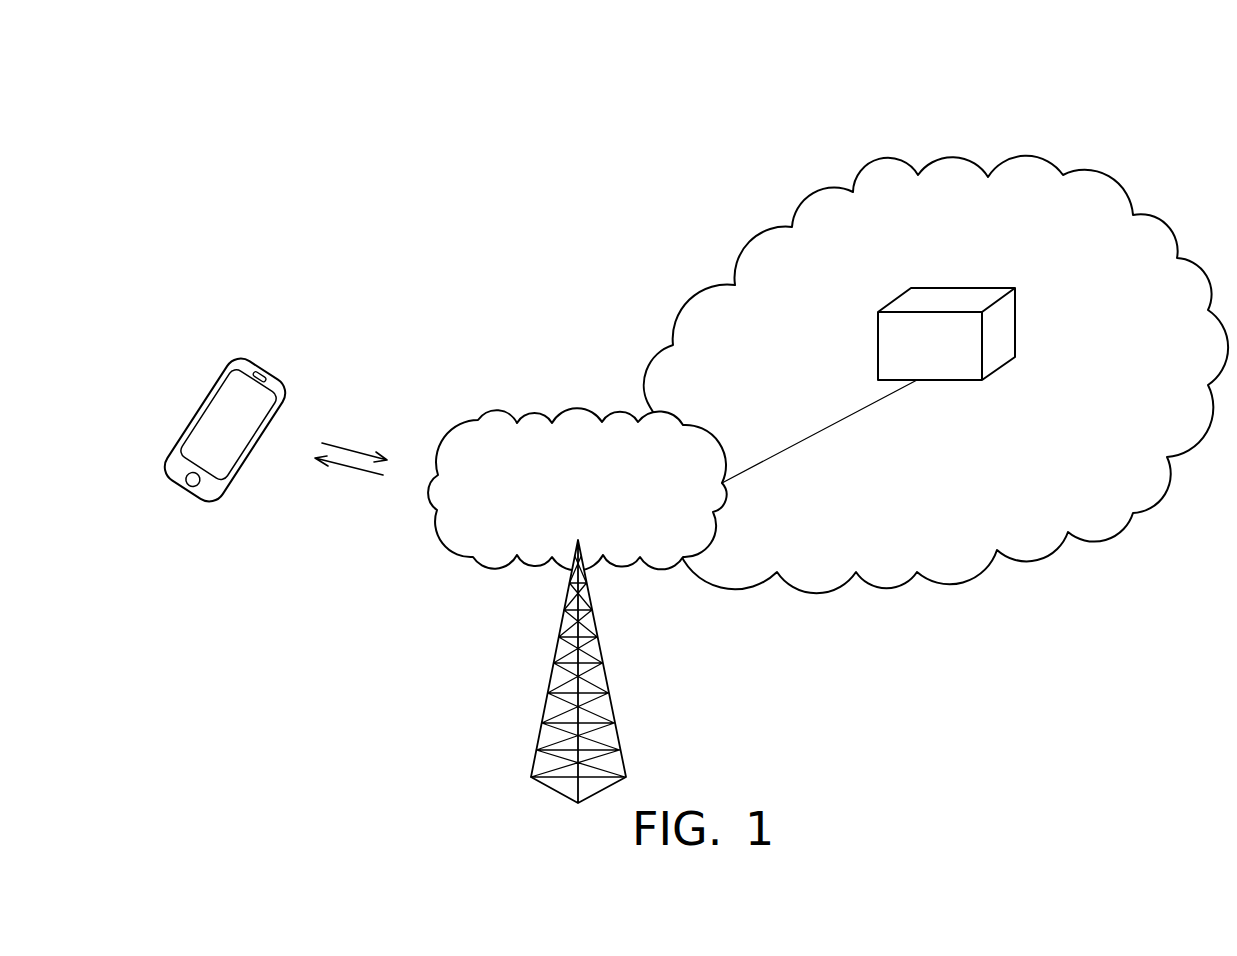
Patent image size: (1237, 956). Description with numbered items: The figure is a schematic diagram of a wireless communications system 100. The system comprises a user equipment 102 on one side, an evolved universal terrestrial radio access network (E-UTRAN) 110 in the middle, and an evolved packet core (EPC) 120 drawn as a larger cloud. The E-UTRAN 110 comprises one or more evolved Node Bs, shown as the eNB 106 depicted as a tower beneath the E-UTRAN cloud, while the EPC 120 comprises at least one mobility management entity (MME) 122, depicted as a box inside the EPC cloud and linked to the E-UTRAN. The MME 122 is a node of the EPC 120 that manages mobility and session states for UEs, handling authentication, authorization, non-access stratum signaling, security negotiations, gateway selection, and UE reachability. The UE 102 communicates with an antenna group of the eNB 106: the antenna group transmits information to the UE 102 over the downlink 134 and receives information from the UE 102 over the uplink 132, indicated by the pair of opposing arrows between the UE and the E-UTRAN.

The wireless communications system 100 is at (1210, 77).
The user equipment 102 is at (258, 363).
The evolved Node B 106 is at (603, 657).
The evolved universal terrestrial radio access network 110 is at (577, 410).
The evolved packet core 120 is at (1027, 155).
The mobility management entity 122 is at (1017, 322).
The uplink 132 is at (352, 452).
The downlink 134 is at (350, 468).